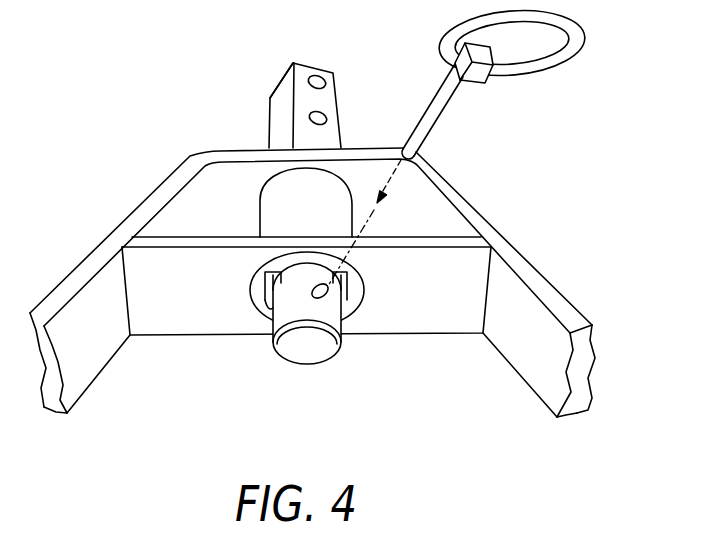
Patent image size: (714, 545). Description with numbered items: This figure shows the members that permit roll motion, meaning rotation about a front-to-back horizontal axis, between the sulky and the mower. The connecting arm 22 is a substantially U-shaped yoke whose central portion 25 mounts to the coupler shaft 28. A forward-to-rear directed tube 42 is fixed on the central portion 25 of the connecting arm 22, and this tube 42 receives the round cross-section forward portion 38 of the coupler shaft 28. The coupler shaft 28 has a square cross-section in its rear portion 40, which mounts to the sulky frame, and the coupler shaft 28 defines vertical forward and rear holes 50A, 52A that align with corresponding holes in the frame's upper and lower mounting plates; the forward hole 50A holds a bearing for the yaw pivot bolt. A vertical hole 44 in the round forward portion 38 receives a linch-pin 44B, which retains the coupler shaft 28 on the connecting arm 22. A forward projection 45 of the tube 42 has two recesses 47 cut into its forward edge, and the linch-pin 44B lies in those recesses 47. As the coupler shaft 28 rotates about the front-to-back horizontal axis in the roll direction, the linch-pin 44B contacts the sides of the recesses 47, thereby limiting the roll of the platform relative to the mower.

The connecting arm 22 is at (562, 312).
The central portion 25 is at (222, 150).
The coupler shaft 28 is at (260, 115).
The rear portion 40 is at (285, 62).
The forward hole 50A is at (326, 115).
The rear hole 52A is at (319, 77).
The tube 42 is at (278, 210).
The forward portion 38 is at (312, 352).
The vertical hole 44 is at (330, 288).
The linch-pin 44B is at (453, 108).
The forward projection 45 is at (266, 290).
The recesses 47 is at (273, 304).